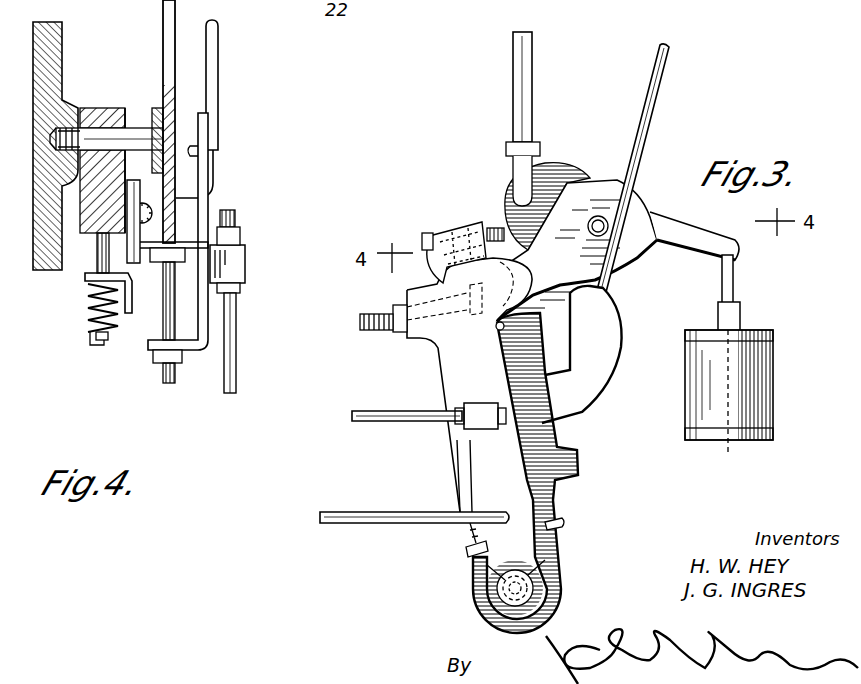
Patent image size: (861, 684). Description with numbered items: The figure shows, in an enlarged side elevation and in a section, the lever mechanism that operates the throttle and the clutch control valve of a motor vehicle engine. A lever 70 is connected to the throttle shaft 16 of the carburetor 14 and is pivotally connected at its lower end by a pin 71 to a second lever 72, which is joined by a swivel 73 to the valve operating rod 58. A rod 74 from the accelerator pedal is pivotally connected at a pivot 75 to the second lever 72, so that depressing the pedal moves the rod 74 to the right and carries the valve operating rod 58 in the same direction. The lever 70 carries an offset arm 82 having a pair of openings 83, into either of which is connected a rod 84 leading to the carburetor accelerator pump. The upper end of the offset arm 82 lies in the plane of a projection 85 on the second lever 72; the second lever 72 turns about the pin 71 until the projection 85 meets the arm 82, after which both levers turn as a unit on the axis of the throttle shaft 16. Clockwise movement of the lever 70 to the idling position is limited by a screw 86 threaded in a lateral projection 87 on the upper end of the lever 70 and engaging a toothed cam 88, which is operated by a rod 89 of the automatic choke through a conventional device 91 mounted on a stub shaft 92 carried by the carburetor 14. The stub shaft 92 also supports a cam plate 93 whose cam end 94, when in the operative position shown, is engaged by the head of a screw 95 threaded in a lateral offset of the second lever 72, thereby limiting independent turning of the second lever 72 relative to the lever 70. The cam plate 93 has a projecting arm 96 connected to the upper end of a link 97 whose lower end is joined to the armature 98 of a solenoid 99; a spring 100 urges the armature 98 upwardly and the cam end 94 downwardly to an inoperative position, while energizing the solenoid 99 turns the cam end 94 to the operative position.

In FIG. 4, the carburetor 14 is at (55, 85).
In FIG. 3, the throttle shaft 16 is at (506, 327).
In FIG. 4, the valve operating rod 58 is at (240, 347).
In FIG. 3, the valve operating rod 58 is at (380, 412).
In FIG. 4, the lever 70 is at (132, 314).
In FIG. 3, the lever 70 is at (575, 430).
In FIG. 3, the pin 71 is at (580, 560).
In FIG. 4, the second lever 72 is at (225, 324).
In FIG. 3, the second lever 72 is at (460, 458).
In FIG. 4, the swivel 73 is at (248, 254).
In FIG. 3, the swivel 73 is at (477, 403).
In FIG. 3, the rod 74 is at (360, 512).
In FIG. 3, the pivotal connection 75 is at (504, 512).
In FIG. 4, the offset arm 82 is at (222, 158).
In FIG. 3, the offset arm 82 is at (623, 351).
In FIG. 3, the openings 83 is at (589, 297).
In FIG. 3, the rod 84 is at (648, 142).
In FIG. 4, the projection 85 is at (212, 196).
In FIG. 3, the projection 85 is at (565, 521).
In FIG. 4, the screw 86 is at (92, 260).
In FIG. 3, the screw 86 is at (492, 222).
In FIG. 4, the lateral projection 87 is at (92, 294).
In FIG. 3, the lateral projection 87 is at (478, 220).
In FIG. 4, the toothed cam 88 is at (93, 108).
In FIG. 4, the rod 89 is at (152, 214).
In FIG. 3, the rod 89 is at (534, 94).
In FIG. 4, the device 91 is at (116, 108).
In FIG. 3, the device 91 is at (550, 162).
In FIG. 4, the stub shaft 92 is at (172, 132).
In FIG. 3, the stub shaft 92 is at (597, 216).
In FIG. 4, the cam plate 93 is at (176, 82).
In FIG. 3, the cam plate 93 is at (592, 182).
In FIG. 4, the cam end 94 is at (180, 243).
In FIG. 3, the cam end 94 is at (469, 385).
In FIG. 4, the screw 95 is at (165, 383).
In FIG. 3, the screw 95 is at (372, 330).
In FIG. 4, the projecting arm 96 is at (192, 352).
In FIG. 3, the projecting arm 96 is at (672, 224).
In FIG. 3, the link 97 is at (733, 282).
In FIG. 3, the armature 98 is at (740, 316).
In FIG. 3, the solenoid 99 is at (774, 367).
In FIG. 3, the spring 100 is at (732, 403).